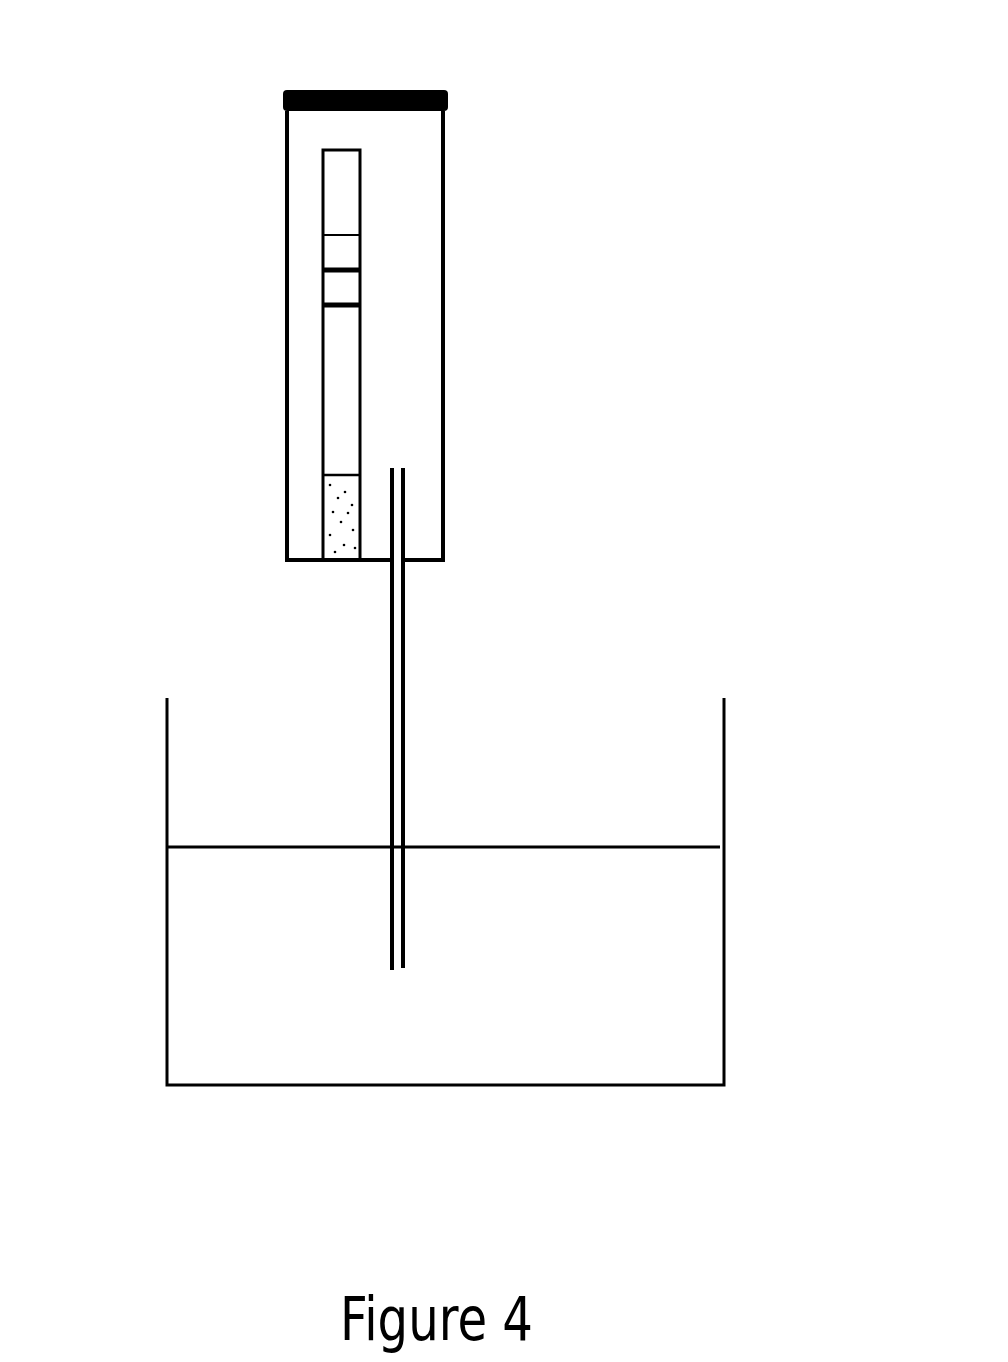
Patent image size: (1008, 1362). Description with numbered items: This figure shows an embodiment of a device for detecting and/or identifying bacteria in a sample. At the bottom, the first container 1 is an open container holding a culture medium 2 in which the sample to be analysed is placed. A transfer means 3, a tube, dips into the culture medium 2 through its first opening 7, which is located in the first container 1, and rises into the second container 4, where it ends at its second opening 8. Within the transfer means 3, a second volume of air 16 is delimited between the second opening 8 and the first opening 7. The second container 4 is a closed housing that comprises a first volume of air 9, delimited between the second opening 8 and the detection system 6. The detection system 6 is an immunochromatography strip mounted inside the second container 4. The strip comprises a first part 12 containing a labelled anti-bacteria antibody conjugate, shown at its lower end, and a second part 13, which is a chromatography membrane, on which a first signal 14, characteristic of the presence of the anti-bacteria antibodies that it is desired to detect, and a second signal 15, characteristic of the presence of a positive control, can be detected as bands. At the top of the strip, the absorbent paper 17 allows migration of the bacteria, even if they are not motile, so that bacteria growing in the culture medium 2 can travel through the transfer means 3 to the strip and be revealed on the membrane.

The first container 1 is at (741, 995).
The culture medium 2 is at (668, 1068).
The transfer means 3 is at (418, 670).
The second container 4 is at (460, 125).
The detection system 6 is at (383, 370).
The first opening 7 is at (418, 970).
The second opening 8 is at (428, 468).
The first volume of air 9 is at (426, 213).
The first part 12 is at (304, 537).
The second part 13 is at (304, 412).
The first signal 14 is at (306, 305).
The second signal 15 is at (306, 270).
The second volume of air 16 is at (418, 760).
The absorbent paper 17 is at (317, 172).